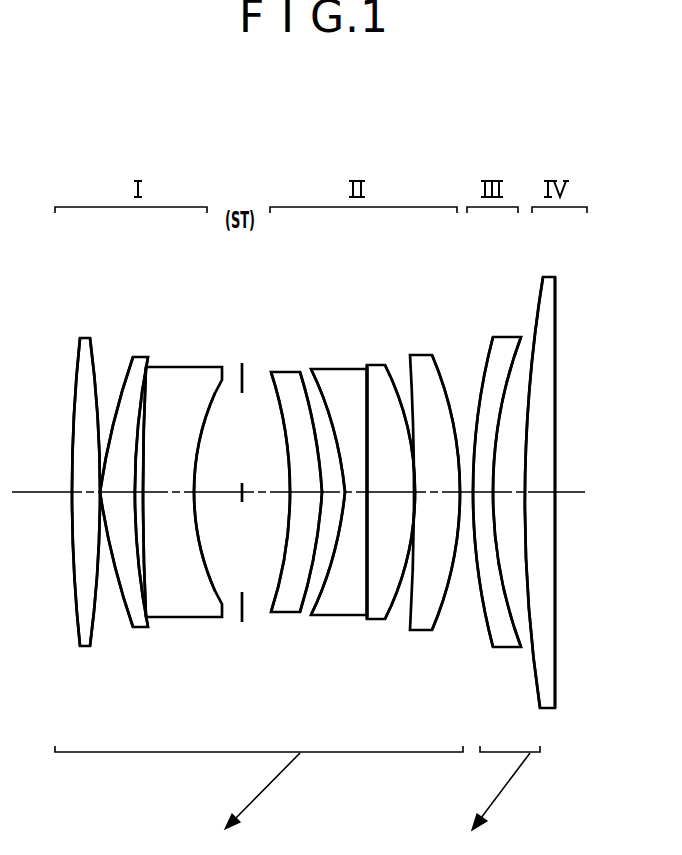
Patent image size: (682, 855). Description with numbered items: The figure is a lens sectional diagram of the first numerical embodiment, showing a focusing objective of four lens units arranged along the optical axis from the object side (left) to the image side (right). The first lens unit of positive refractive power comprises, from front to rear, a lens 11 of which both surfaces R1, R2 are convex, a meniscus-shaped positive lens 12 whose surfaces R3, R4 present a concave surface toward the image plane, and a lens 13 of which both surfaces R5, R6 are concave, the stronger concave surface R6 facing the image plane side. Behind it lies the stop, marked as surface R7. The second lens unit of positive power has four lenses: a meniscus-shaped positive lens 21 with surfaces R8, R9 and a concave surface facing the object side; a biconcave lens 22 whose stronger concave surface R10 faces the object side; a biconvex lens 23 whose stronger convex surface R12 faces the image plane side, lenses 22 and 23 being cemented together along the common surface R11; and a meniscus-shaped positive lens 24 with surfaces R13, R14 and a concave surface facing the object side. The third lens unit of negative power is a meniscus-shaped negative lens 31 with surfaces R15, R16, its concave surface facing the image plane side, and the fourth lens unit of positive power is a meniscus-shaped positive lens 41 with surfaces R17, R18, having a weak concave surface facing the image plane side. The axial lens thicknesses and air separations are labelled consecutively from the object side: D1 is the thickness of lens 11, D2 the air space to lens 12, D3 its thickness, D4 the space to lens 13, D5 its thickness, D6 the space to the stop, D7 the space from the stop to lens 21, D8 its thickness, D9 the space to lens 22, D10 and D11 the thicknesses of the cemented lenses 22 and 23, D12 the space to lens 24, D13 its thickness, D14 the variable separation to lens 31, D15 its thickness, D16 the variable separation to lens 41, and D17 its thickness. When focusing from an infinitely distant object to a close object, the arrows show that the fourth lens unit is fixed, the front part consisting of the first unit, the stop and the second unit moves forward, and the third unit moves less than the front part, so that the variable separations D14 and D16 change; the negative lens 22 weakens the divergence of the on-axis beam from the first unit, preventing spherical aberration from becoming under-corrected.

The lens of which both lens surfaces are convex surfaces 11 is at (87, 406).
The meniscus-shaped positive lens 12 is at (125, 440).
The negative lens of which both lens surfaces are concave 13 is at (173, 469).
The meniscus-shaped positive lens 21 is at (302, 413).
The negative lens of which both lens surfaces are concave 22 is at (350, 438).
The lens of which both lens surfaces are convex 23 is at (385, 471).
The meniscus-shaped positive lens 24 is at (427, 403).
The meniscus-shaped negative lens 31 is at (482, 441).
The meniscus-shaped positive lens 41 is at (535, 472).
The first lens surface R1 is at (79, 352).
The second lens surface R2 is at (91, 350).
The third lens surface R3 is at (131, 362).
The fourth lens surface R4 is at (149, 368).
The fifth lens surface R5 is at (165, 367).
The sixth lens surface R6 is at (220, 367).
The stop R7 is at (240, 362).
The eighth lens surface R8 is at (263, 371).
The ninth lens surface R9 is at (291, 371).
The tenth lens surface R10 is at (323, 368).
The eleventh lens surface R11 is at (358, 365).
The twelfth lens surface R12 is at (398, 365).
The thirteenth lens surface R13 is at (406, 366).
The fourteenth lens surface R14 is at (445, 368).
The fifteenth lens surface R15 is at (480, 338).
The sixteenth lens surface R16 is at (525, 337).
The seventeenth lens surface R17 is at (538, 312).
The eighteenth lens surface R18 is at (557, 310).
The first lens thickness D1 is at (74, 585).
The second air separation D2 is at (100, 503).
The third lens thickness D3 is at (118, 503).
The fourth air separation D4 is at (139, 503).
The fifth lens thickness D5 is at (172, 505).
The sixth air separation D6 is at (218, 505).
The seventh air separation D7 is at (262, 505).
The eighth lens thickness D8 is at (305, 503).
The ninth air separation D9 is at (335, 503).
The tenth lens thickness D10 is at (358, 503).
The eleventh lens thickness D11 is at (391, 503).
The twelfth air separation D12 is at (413, 503).
The thirteenth lens thickness D13 is at (437, 503).
The fourteenth air separation D14 is at (466, 503).
The fifteenth lens thickness D15 is at (483, 503).
The sixteenth air separation D16 is at (510, 503).
The seventeenth lens thickness D17 is at (540, 503).